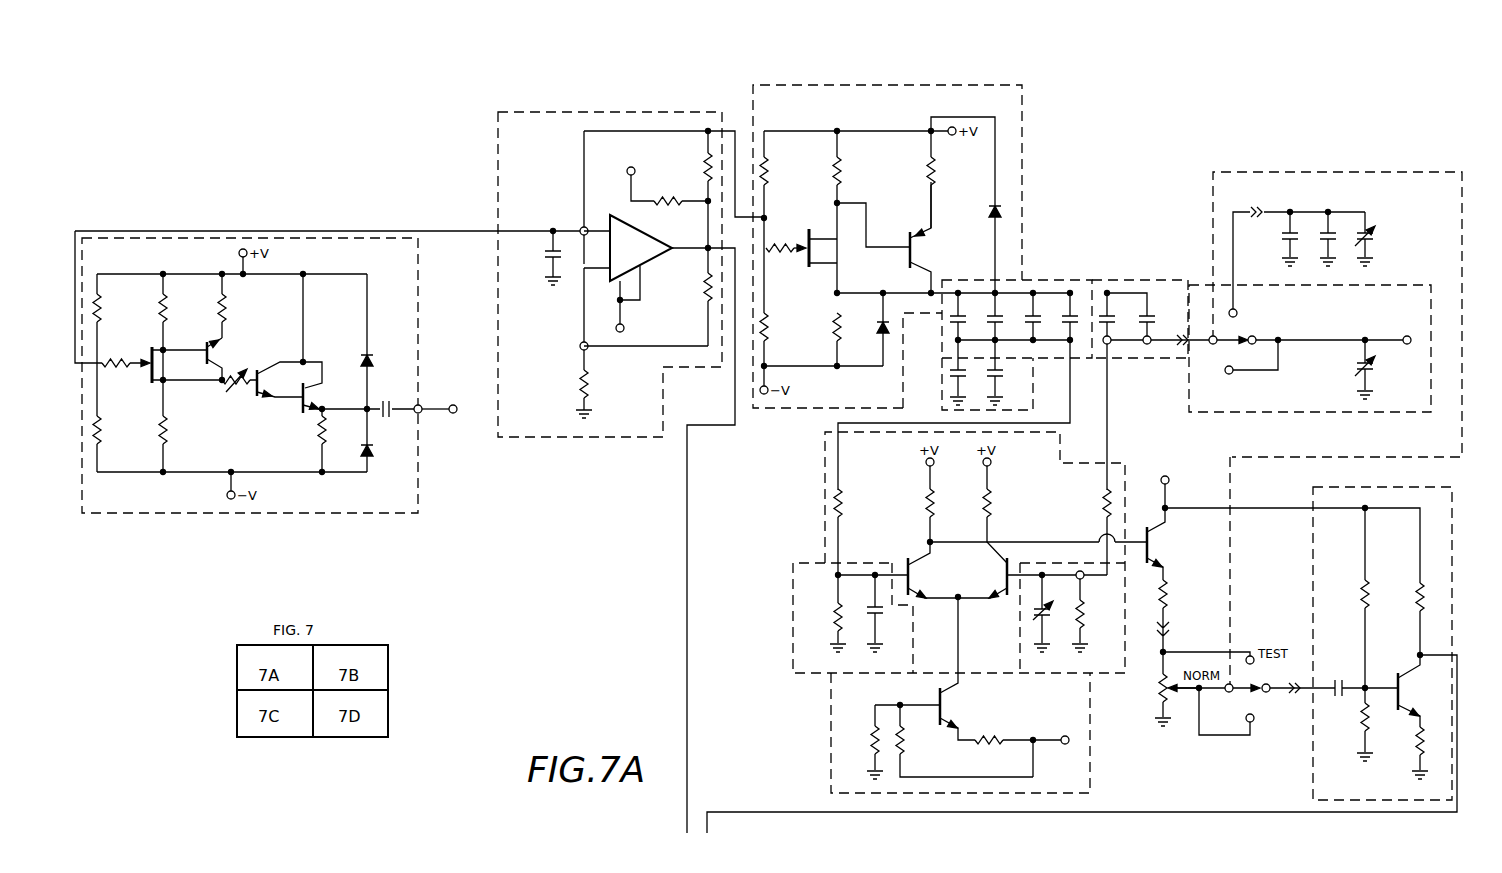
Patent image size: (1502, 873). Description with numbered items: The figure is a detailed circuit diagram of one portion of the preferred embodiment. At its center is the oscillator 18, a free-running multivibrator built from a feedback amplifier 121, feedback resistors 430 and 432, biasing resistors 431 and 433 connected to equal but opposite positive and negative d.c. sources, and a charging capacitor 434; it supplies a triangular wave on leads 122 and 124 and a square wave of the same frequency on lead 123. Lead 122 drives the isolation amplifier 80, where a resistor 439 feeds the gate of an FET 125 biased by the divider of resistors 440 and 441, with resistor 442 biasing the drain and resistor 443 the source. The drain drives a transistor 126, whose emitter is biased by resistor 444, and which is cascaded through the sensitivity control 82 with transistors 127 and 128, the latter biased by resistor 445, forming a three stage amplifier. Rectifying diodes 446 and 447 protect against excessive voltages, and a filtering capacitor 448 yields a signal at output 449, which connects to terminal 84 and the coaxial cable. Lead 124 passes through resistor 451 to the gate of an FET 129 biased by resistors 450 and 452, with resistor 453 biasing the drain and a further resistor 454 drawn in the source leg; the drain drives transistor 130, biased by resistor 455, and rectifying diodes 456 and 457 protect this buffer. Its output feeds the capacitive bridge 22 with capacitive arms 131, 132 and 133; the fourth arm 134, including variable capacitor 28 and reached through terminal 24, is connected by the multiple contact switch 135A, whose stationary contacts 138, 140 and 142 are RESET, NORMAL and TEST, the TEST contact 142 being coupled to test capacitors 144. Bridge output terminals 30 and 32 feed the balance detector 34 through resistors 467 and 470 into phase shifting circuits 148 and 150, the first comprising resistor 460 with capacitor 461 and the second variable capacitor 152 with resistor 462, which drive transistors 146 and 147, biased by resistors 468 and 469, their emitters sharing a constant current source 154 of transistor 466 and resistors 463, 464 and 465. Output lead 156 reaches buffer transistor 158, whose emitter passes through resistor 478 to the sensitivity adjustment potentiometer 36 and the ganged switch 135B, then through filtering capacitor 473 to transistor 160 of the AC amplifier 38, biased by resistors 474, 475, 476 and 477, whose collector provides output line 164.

The isolation amplifier 80 is at (182, 234).
The lead 122 is at (437, 231).
The resistor 440 is at (120, 297).
The resistor 441 is at (100, 426).
The resistor 442 is at (168, 307).
The resistor 443 is at (171, 428).
The resistor 444 is at (224, 307).
The resistor 445 is at (314, 445).
The resistor 439 is at (125, 360).
The FET 125 is at (142, 375).
The transistor 126 is at (210, 342).
The sensitivity control 82 is at (244, 367).
The transistor 127 is at (251, 397).
The transistor 128 is at (299, 413).
The rectifying diode 446 is at (358, 360).
The rectifying diode 447 is at (375, 450).
The filtering capacitor 448 is at (385, 399).
The output 449 is at (423, 404).
The terminal 84 is at (453, 413).
The oscillator 18 is at (596, 106).
The feedback amplifier 121 is at (632, 213).
The feedback resistor 430 is at (702, 167).
The biasing resistor 431 is at (672, 195).
The feedback resistor 432 is at (700, 288).
The biasing resistor 433 is at (594, 375).
The charging capacitor 434 is at (548, 250).
The lead 124 is at (743, 219).
The lead 123 is at (714, 428).
The capacitive bridge 22 is at (1040, 268).
The resistor 450 is at (792, 159).
The resistor 451 is at (785, 255).
The resistor 452 is at (770, 328).
The resistor 453 is at (842, 165).
The resistor 454 is at (830, 338).
The resistor 455 is at (935, 170).
The rectifying diode 456 is at (878, 330).
The rectifying diode 457 is at (986, 210).
The FET 129 is at (805, 232).
The transistor 130 is at (912, 237).
The output terminal 30 is at (1068, 344).
The capacitive arm 131 is at (942, 343).
The capacitive arm 132 is at (942, 395).
The output terminal 32 is at (1105, 346).
The capacitive arm 133 is at (1142, 360).
The fourth arm 134 is at (1348, 413).
The terminal 24 is at (1408, 335).
The NORMAL contact 140 is at (1253, 345).
The TEST contact 142 is at (1236, 305).
The TEST capacitors 144 is at (1330, 205).
The RESET contact 138 is at (1226, 370).
The multiple contact switch 135A is at (1290, 372).
The variable capacitor 28 is at (1360, 365).
The balance detector 34 is at (818, 480).
The phase shifting circuit 148 is at (803, 563).
The phase shifting circuit 150 is at (1020, 655).
The constant current source 154 is at (826, 705).
The resistor 467 is at (841, 503).
The biasing resistor 468 is at (933, 503).
The biasing resistor 469 is at (990, 503).
The resistor 470 is at (1105, 497).
The resistor 460 is at (830, 625).
The capacitor 461 is at (878, 616).
The resistor 462 is at (1080, 612).
The variable capacitor 152 is at (1035, 614).
The transistor 146 is at (906, 560).
The transistor 147 is at (1010, 565).
The output lead 156 is at (1040, 542).
The transistor 466 is at (938, 696).
The resistor 463 is at (872, 738).
The biasing resistor 464 is at (908, 735).
The resistor 465 is at (990, 745).
The transistor 158 is at (1145, 525).
The resistor 478 is at (1168, 595).
The sensitivity adjustment potentiometer 36 is at (1146, 700).
The multiple contact switch 135B is at (1244, 750).
The AC amplifier 38 is at (1443, 643).
The filtering capacitor 473 is at (1342, 678).
The resistor 474 is at (1358, 603).
The resistor 475 is at (1360, 730).
The resistor 476 is at (1415, 603).
The resistor 477 is at (1417, 748).
The transistor 160 is at (1398, 676).
The output line 164 is at (755, 812).